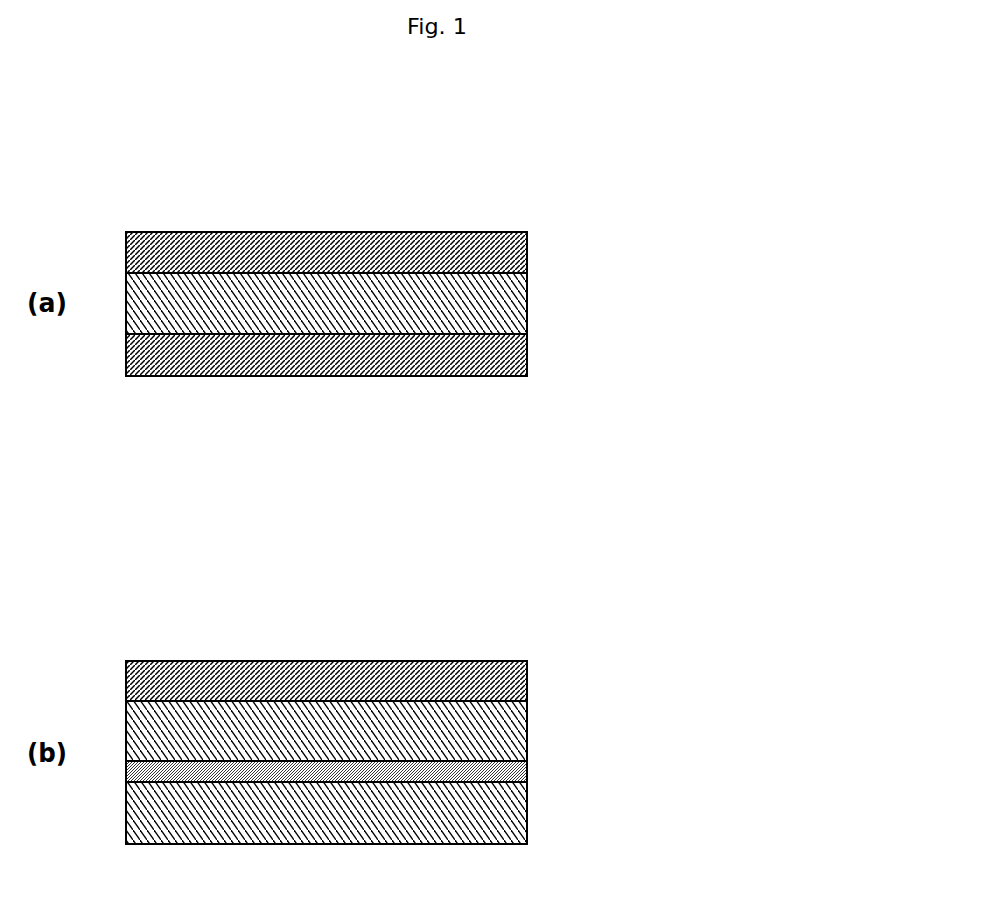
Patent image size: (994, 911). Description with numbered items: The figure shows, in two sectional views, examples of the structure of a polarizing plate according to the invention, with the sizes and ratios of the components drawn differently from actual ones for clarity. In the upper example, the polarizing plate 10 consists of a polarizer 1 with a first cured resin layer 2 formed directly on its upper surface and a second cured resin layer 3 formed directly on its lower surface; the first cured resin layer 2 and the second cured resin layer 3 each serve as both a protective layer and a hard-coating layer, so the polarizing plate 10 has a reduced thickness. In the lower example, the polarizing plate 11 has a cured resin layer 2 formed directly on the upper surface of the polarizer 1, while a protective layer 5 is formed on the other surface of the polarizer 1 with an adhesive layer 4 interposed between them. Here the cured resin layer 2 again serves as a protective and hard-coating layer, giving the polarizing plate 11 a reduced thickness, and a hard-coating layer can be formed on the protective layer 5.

The polarizing plate 10 is at (455, 182).
The polarizing plate 11 is at (488, 615).
The polarizer 1 is at (507, 306).
The first cured resin layer 2 is at (515, 253).
The second cured resin layer 3 is at (507, 360).
The adhesive layer 4 is at (507, 779).
The protective layer 5 is at (507, 824).